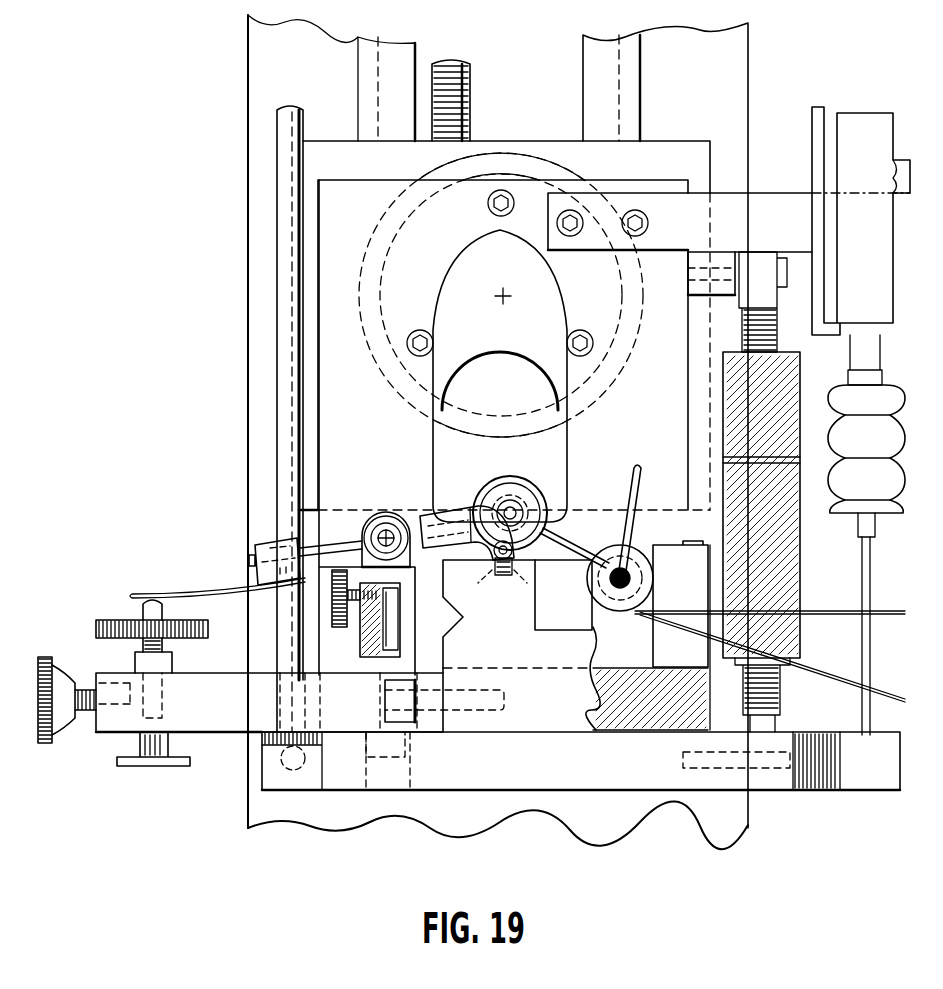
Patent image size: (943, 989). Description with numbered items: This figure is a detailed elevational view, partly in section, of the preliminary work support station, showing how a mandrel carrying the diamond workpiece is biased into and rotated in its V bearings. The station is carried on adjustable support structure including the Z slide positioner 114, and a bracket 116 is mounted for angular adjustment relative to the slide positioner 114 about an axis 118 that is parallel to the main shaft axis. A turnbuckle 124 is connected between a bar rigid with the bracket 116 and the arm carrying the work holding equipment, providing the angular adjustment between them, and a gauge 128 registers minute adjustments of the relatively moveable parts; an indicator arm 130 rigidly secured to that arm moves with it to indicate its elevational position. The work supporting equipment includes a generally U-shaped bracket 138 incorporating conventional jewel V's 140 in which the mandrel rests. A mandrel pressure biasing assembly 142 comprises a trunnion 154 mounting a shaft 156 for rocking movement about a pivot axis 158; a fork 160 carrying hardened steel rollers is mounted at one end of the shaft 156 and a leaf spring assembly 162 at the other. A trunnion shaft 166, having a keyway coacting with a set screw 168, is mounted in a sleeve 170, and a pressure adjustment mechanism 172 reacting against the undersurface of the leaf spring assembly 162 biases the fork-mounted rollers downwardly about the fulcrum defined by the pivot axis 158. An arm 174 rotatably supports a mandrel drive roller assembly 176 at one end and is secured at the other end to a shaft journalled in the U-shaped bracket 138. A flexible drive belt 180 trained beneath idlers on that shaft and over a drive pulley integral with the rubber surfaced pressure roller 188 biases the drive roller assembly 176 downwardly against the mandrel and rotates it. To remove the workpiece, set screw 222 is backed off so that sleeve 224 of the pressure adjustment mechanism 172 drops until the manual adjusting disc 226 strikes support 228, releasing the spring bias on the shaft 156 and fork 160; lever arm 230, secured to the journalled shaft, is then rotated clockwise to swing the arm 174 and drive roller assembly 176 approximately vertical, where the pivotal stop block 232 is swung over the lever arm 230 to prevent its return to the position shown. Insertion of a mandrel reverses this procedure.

The Z slide positioner 114 is at (670, 150).
The bracket 116 is at (365, 244).
The axis 118 is at (505, 298).
The turnbuckle 124 is at (745, 384).
The gauge 128 is at (855, 115).
The indicator arm 130 is at (290, 322).
The U-shaped bracket 138 is at (531, 660).
The jewel V's 140 is at (509, 572).
The mandrel pressure biasing assembly 142 is at (378, 514).
The trunnion 154 is at (402, 558).
The shaft 156 is at (340, 546).
The pivot axis 158 is at (376, 462).
The fork 160 is at (463, 508).
The leaf spring assembly 162 is at (215, 572).
The trunnion shaft 166 is at (372, 615).
The set screw 168 is at (332, 606).
The sleeve 170 is at (424, 630).
The pressure adjustment mechanism 172 is at (158, 630).
The arm 174 is at (600, 545).
The mandrel drive roller assembly 176 is at (521, 498).
The flexible drive belt 180 is at (840, 620).
The pressure roller 188 is at (536, 498).
The set screw 222 is at (60, 712).
The sleeve 224 is at (172, 746).
The manual adjusting disc 226 is at (192, 622).
The support 228 is at (232, 709).
The lever arm 230 is at (642, 512).
The pivotal stop block 232 is at (668, 560).